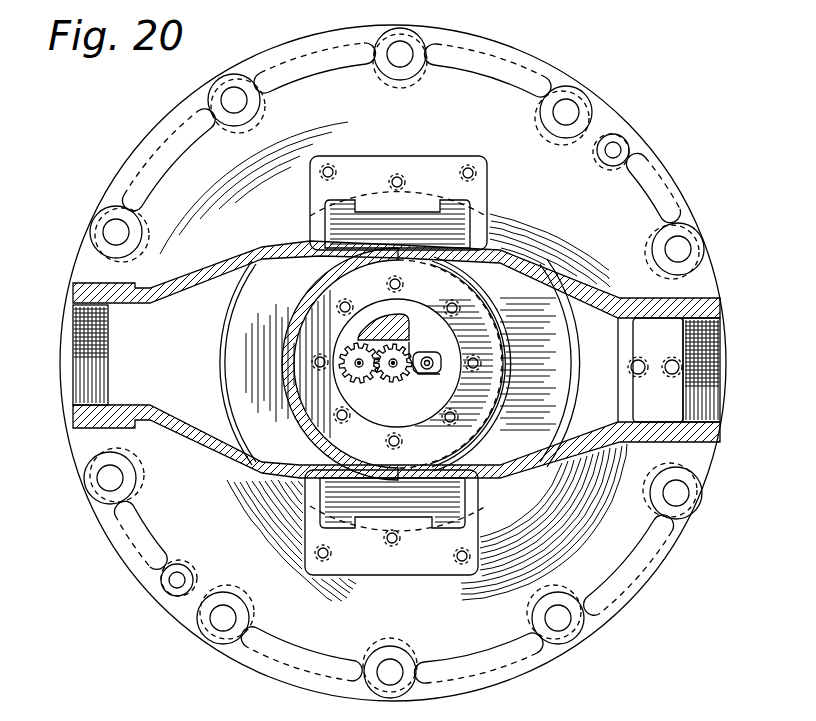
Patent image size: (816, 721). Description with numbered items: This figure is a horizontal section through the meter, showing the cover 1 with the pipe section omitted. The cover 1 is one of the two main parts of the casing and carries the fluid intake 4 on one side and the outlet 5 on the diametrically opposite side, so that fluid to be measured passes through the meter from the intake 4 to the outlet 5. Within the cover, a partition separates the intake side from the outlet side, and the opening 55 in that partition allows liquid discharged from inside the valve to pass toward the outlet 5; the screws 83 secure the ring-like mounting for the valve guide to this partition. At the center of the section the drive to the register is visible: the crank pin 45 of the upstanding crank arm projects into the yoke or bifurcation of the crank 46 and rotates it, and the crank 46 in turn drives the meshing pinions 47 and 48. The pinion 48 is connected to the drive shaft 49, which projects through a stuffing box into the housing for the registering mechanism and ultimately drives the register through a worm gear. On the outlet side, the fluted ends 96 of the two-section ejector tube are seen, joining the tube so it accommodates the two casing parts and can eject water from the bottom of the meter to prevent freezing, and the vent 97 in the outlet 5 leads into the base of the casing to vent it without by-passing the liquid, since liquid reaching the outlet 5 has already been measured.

The cover 1 is at (593, 560).
The fluid intake 4 is at (92, 357).
The outlet 5 is at (713, 352).
The crank pin 45 is at (418, 374).
The crank 46 is at (436, 366).
The pinion 47 is at (392, 379).
The pinion 48 is at (365, 378).
The drive shaft 49 is at (356, 368).
The opening 55 is at (410, 306).
The screws 83 is at (472, 367).
The fluted ends 96 is at (640, 374).
The vent 97 is at (673, 374).